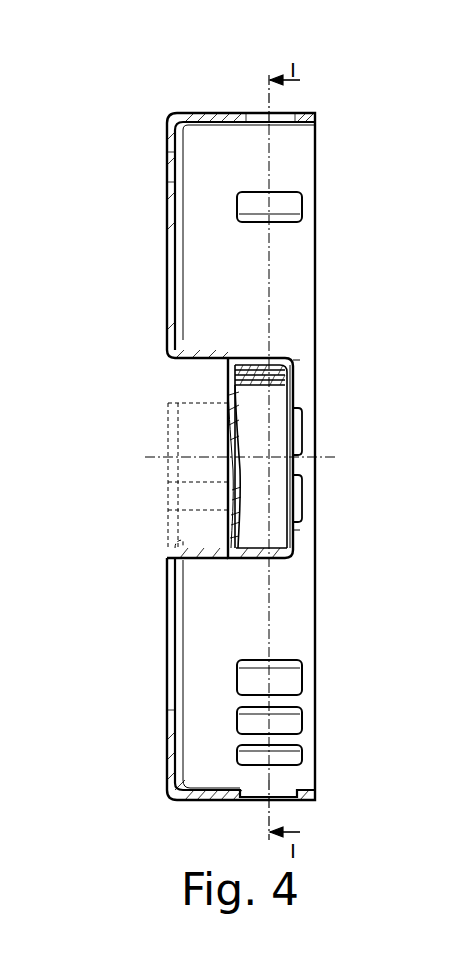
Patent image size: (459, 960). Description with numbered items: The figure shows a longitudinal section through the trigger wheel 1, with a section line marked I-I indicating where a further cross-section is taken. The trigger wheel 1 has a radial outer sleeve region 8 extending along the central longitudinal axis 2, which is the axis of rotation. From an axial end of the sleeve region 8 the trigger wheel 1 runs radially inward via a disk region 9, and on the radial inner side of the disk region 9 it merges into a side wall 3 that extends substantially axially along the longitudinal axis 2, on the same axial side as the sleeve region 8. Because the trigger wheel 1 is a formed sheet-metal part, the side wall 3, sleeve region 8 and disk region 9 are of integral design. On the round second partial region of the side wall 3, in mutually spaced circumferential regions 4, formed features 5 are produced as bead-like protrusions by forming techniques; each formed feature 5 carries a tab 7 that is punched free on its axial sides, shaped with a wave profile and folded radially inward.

The trigger wheel 1 is at (126, 97).
The central longitudinal axis 2 is at (153, 457).
The side wall 3 is at (255, 360).
The circumferential regions 4 is at (226, 380).
The formed features 5 is at (278, 377).
The tab 7 is at (258, 380).
The sleeve region 8 is at (210, 118).
The disk region 9 is at (172, 262).